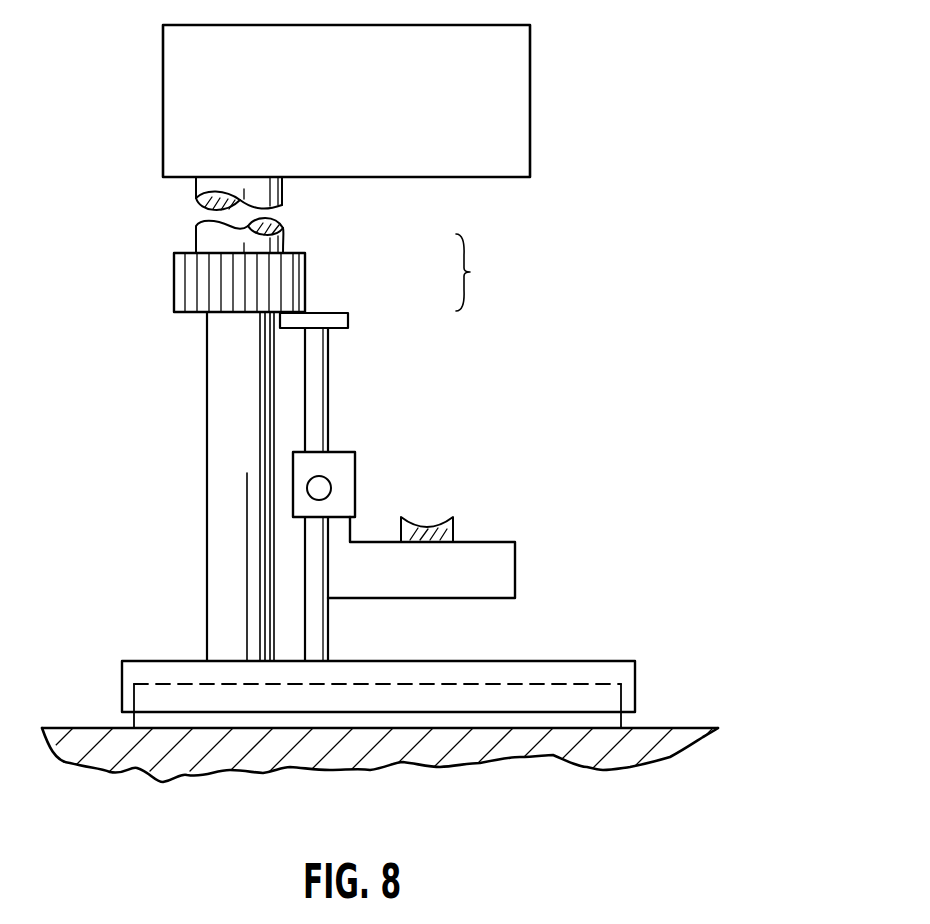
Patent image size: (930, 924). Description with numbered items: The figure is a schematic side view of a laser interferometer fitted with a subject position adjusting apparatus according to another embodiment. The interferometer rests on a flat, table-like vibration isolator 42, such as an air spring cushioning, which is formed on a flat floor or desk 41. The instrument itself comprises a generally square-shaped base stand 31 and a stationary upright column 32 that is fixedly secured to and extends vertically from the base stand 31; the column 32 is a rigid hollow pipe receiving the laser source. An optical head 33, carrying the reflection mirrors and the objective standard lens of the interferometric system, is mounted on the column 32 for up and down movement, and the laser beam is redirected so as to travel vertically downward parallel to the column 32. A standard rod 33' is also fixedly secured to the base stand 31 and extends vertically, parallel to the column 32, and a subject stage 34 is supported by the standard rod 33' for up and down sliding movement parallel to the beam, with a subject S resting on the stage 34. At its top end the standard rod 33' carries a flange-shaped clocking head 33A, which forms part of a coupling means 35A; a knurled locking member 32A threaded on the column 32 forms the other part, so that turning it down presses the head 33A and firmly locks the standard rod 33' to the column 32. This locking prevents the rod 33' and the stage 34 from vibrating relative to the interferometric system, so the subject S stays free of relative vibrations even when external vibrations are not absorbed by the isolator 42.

The optical head 33 is at (377, 139).
The knurled adjustment nut 32A is at (305, 275).
The clocking head 33A is at (346, 316).
The coupling means 35A is at (485, 272).
The stationary upright column 32 is at (215, 472).
The standard rod 33' is at (348, 494).
The subject stage 34 is at (502, 550).
The subject S is at (450, 518).
The base stand 31 is at (470, 678).
The floor or desk 41 is at (86, 730).
The vibration isolator 42 is at (585, 720).